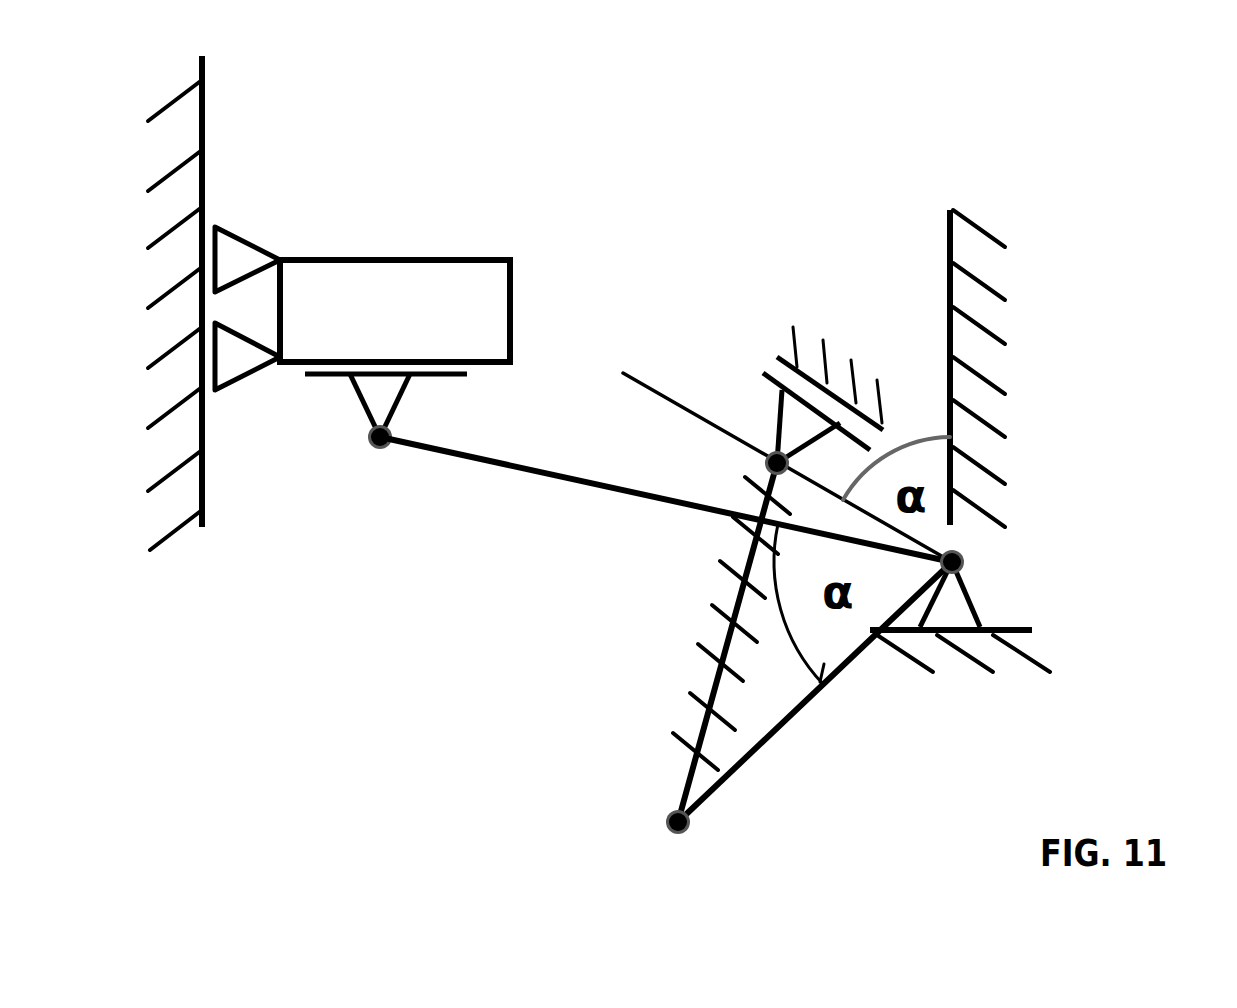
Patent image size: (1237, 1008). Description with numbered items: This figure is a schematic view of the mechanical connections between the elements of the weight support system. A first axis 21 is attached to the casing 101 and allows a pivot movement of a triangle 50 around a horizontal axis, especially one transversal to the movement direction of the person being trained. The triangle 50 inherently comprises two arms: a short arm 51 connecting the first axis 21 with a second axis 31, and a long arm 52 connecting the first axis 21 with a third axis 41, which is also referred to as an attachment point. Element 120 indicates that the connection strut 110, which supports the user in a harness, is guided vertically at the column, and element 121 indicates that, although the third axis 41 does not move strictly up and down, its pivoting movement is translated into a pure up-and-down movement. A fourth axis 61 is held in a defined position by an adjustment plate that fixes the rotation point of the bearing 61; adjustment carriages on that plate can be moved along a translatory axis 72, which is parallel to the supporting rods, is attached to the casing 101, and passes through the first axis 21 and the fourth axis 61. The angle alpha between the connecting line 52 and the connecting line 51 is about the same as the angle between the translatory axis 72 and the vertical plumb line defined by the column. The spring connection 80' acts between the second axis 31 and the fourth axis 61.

The casing 101 is at (205, 100).
The connection strut 110 is at (395, 280).
The element indicating vertical guidance 120 is at (258, 230).
The element indicating translation into up-and-down movement 121 is at (343, 410).
The third axis 41 is at (372, 450).
The long arm 52 is at (540, 468).
The triangle 50 is at (706, 546).
The short arm 51 is at (772, 740).
The spring connection 80' is at (685, 642).
The translatory axis 72 is at (672, 390).
The fourth axis 61 is at (765, 462).
The first axis 21 is at (965, 556).
The second axis 31 is at (692, 828).